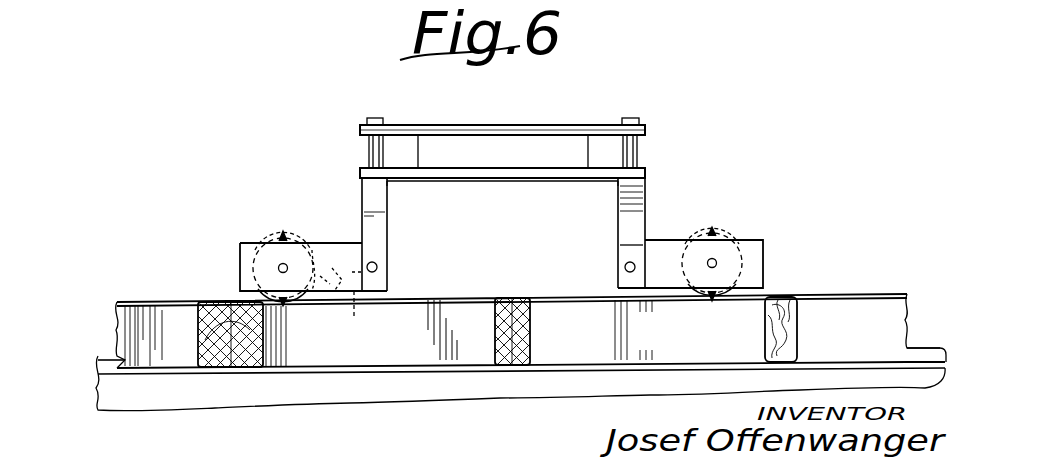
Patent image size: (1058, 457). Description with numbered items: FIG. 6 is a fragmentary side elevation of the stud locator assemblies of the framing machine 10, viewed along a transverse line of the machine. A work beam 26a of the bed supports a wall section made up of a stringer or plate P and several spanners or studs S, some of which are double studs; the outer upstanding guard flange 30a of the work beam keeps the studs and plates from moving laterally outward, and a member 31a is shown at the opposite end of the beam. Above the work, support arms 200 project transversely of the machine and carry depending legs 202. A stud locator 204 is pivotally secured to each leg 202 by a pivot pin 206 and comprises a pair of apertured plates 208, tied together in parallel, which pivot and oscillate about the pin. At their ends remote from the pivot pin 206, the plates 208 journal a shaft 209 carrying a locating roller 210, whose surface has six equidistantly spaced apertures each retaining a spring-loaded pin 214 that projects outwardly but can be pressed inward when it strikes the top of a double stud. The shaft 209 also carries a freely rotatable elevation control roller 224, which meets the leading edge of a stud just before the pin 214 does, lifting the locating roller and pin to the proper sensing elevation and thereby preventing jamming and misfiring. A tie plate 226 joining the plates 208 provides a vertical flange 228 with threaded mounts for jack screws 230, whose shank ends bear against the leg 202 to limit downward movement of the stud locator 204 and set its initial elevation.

The framing machine 10 is at (170, 229).
The support arm 200 is at (399, 132).
The depending leg 202 is at (366, 203).
The stud locator 204 is at (287, 224).
The pivot pin 206 is at (378, 266).
The plate 208 is at (642, 246).
The shaft 209 is at (279, 268).
The locating roller 210 is at (298, 242).
The spring-loaded pin 214 is at (283, 239).
The elevation control roller 224 is at (272, 241).
The tie plate 226 is at (397, 330).
The vertical flange 228 is at (332, 267).
The jack screw 230 is at (388, 270).
The work beam 26a is at (138, 398).
The guard flange 30a is at (100, 357).
The rail 31a is at (929, 348).
The plate P is at (531, 331).
The stud S is at (252, 336).